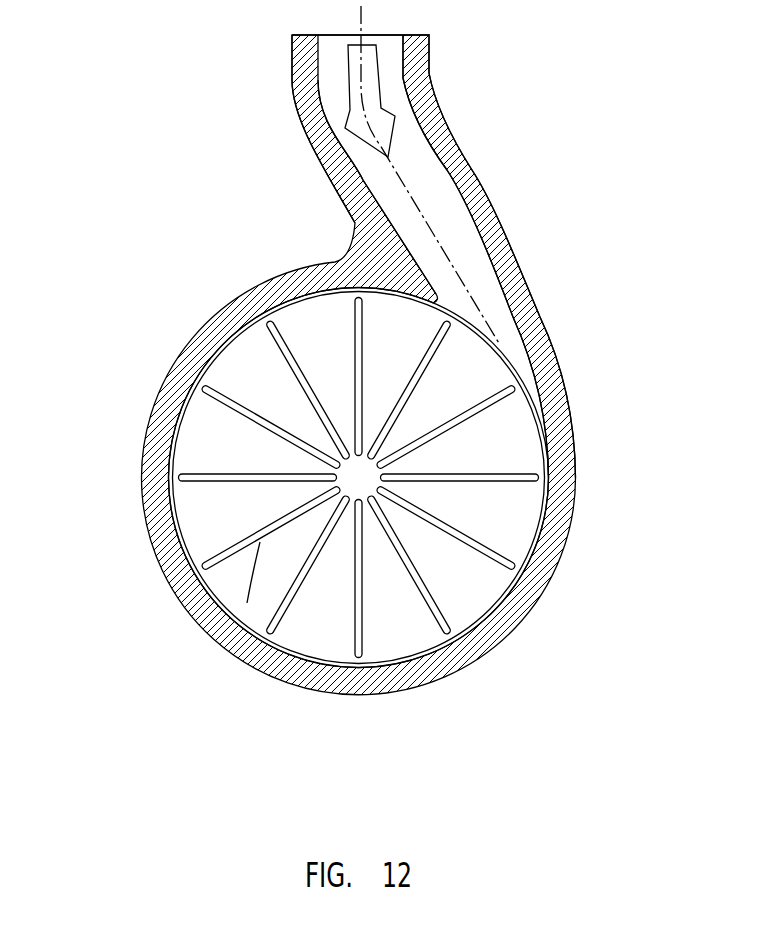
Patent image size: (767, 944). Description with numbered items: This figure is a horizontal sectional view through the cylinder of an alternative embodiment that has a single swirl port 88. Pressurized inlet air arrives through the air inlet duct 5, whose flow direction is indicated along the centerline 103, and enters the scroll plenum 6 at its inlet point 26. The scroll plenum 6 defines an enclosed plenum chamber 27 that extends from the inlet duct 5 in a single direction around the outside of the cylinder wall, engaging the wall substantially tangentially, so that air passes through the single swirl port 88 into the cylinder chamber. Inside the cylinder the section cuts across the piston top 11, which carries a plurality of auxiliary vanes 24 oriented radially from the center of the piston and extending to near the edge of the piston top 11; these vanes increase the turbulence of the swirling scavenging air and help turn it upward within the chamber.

The air inlet duct 5 is at (430, 79).
The scroll plenum 6 is at (515, 627).
The piston top 11 is at (405, 346).
The auxiliary vanes 24 is at (308, 553).
The inlet point 26 is at (408, 145).
The plenum chamber 27 is at (460, 242).
The single swirl port 88 is at (503, 353).
The centerline 103 is at (427, 210).